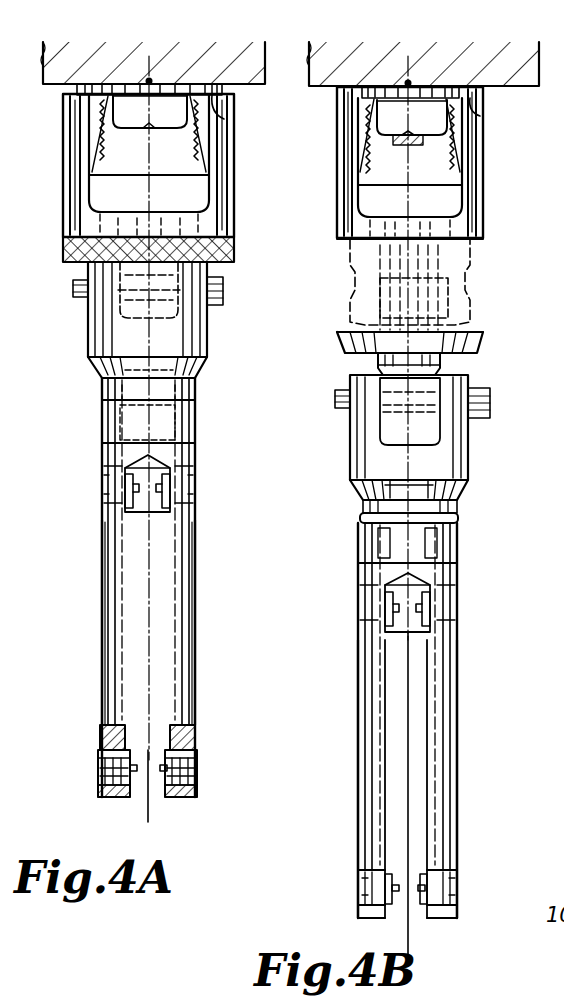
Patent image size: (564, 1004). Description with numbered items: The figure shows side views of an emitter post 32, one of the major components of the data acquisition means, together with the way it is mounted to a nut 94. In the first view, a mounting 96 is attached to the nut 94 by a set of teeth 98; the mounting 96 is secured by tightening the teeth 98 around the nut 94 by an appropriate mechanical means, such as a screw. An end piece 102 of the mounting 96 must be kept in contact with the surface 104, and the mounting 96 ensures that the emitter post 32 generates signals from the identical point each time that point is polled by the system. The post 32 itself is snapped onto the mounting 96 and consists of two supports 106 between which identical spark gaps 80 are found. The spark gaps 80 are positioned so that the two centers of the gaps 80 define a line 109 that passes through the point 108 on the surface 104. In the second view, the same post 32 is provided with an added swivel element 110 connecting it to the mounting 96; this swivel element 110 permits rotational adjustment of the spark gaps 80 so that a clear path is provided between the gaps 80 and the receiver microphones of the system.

In FIG. 4A, the emitter post 32 is at (98, 458).
In FIG. 4B, the emitter post 32 is at (462, 565).
In FIG. 4A, the spark gaps 80 is at (158, 495).
In FIG. 4B, the spark gaps 80 is at (418, 615).
In FIG. 4A, the nut 94 is at (160, 135).
In FIG. 4B, the nut 94 is at (438, 132).
In FIG. 4A, the mounting 96 is at (60, 184).
In FIG. 4B, the mounting 96 is at (490, 172).
In FIG. 4A, the teeth 98 is at (102, 150).
In FIG. 4B, the teeth 98 is at (366, 158).
In FIG. 4A, the end piece 102 is at (74, 89).
In FIG. 4B, the end piece 102 is at (468, 114).
In FIG. 4A, the surface 104 is at (222, 119).
In FIG. 4B, the surface 104 is at (332, 92).
In FIG. 4A, the supports 106 is at (100, 608).
In FIG. 4B, the supports 106 is at (360, 740).
In FIG. 4A, the point 108 is at (158, 78).
In FIG. 4B, the point 108 is at (420, 80).
In FIG. 4A, the line 109 is at (148, 812).
In FIG. 4B, the line 109 is at (408, 938).
In FIG. 4B, the swivel element 110 is at (484, 300).